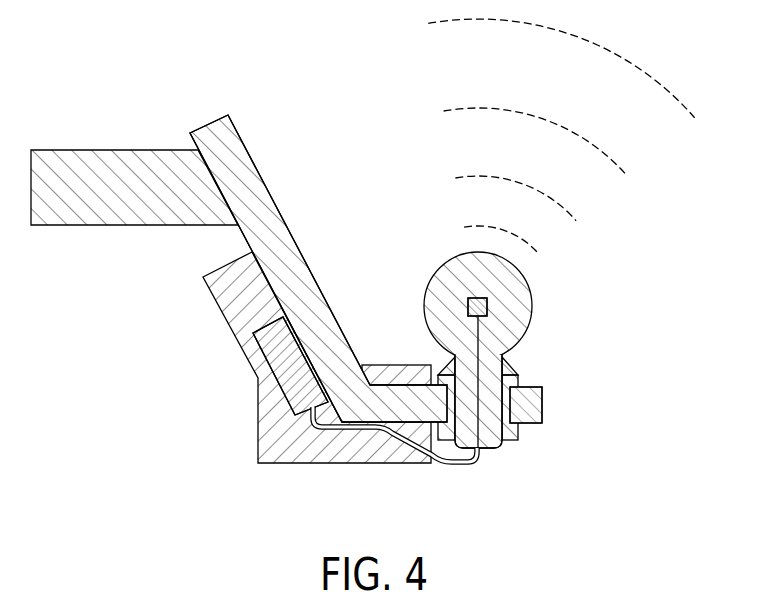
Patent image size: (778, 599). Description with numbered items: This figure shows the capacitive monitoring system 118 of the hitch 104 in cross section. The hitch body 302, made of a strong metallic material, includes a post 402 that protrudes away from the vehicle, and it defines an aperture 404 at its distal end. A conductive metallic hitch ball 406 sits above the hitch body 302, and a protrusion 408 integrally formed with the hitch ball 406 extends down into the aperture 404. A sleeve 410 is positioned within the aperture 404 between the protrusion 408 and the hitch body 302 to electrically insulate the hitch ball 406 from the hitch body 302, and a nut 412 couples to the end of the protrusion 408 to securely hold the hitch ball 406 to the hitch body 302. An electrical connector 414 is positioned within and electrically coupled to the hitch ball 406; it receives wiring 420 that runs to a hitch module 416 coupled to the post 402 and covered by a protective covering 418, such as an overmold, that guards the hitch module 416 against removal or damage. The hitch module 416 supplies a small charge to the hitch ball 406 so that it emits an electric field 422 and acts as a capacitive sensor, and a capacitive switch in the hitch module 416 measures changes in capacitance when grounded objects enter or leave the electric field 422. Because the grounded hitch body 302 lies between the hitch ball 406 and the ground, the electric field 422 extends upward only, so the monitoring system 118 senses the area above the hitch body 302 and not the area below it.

The hitch 104 is at (123, 408).
The monitoring system 118 is at (615, 248).
The hitch body 302 is at (118, 93).
The post 402 is at (250, 152).
The aperture 404 is at (505, 462).
The hitch ball 406 is at (533, 303).
The protrusion 408 is at (488, 452).
The sleeve 410 is at (520, 380).
The nut 412 is at (520, 437).
The electrical connector 414 is at (466, 306).
The hitch module 416 is at (273, 347).
The protective covering 418 is at (268, 465).
The wiring 420 is at (443, 468).
The electric field 422 is at (658, 67).